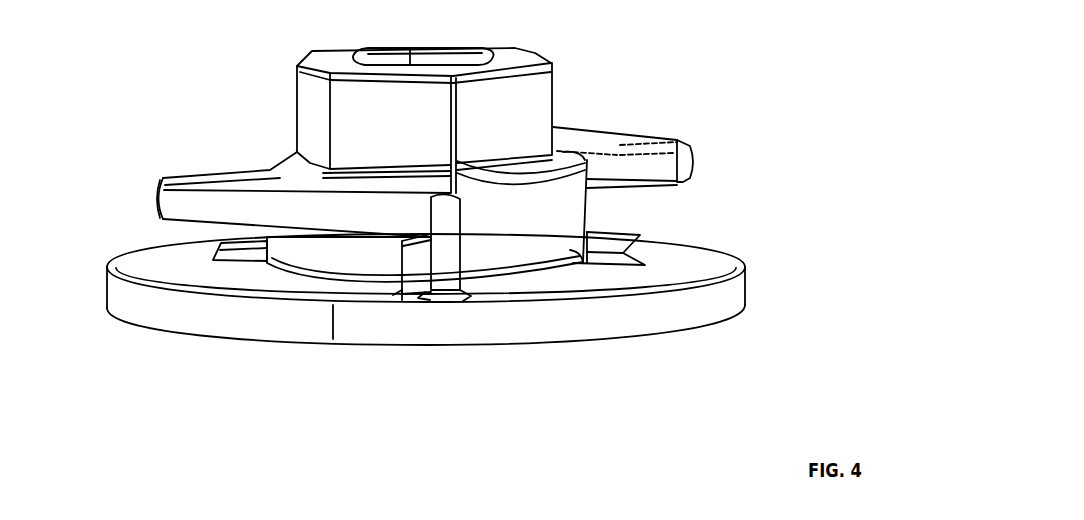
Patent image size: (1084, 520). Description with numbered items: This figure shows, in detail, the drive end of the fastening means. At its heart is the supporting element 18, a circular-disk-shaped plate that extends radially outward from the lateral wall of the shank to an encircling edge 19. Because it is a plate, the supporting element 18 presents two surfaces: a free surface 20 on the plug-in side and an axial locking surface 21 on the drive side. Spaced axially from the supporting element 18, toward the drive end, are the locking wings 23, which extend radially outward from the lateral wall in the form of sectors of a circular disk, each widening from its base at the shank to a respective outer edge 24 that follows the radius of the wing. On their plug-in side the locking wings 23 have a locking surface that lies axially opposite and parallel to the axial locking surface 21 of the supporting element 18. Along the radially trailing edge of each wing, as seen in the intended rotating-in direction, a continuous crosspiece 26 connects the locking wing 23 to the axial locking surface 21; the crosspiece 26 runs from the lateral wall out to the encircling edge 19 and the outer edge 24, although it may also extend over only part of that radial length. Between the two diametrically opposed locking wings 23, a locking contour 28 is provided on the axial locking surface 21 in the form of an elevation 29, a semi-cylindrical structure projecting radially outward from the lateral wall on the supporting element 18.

The supporting element 18 is at (499, 259).
The encircling edge 19 is at (490, 328).
The free surface 20 is at (700, 323).
The axial locking surface 21 is at (696, 262).
The locking wings 23 is at (199, 161).
The outer edge 24 is at (429, 150).
The crosspiece 26 is at (413, 250).
The locking contour 28 is at (468, 274).
The elevation 29 is at (204, 260).